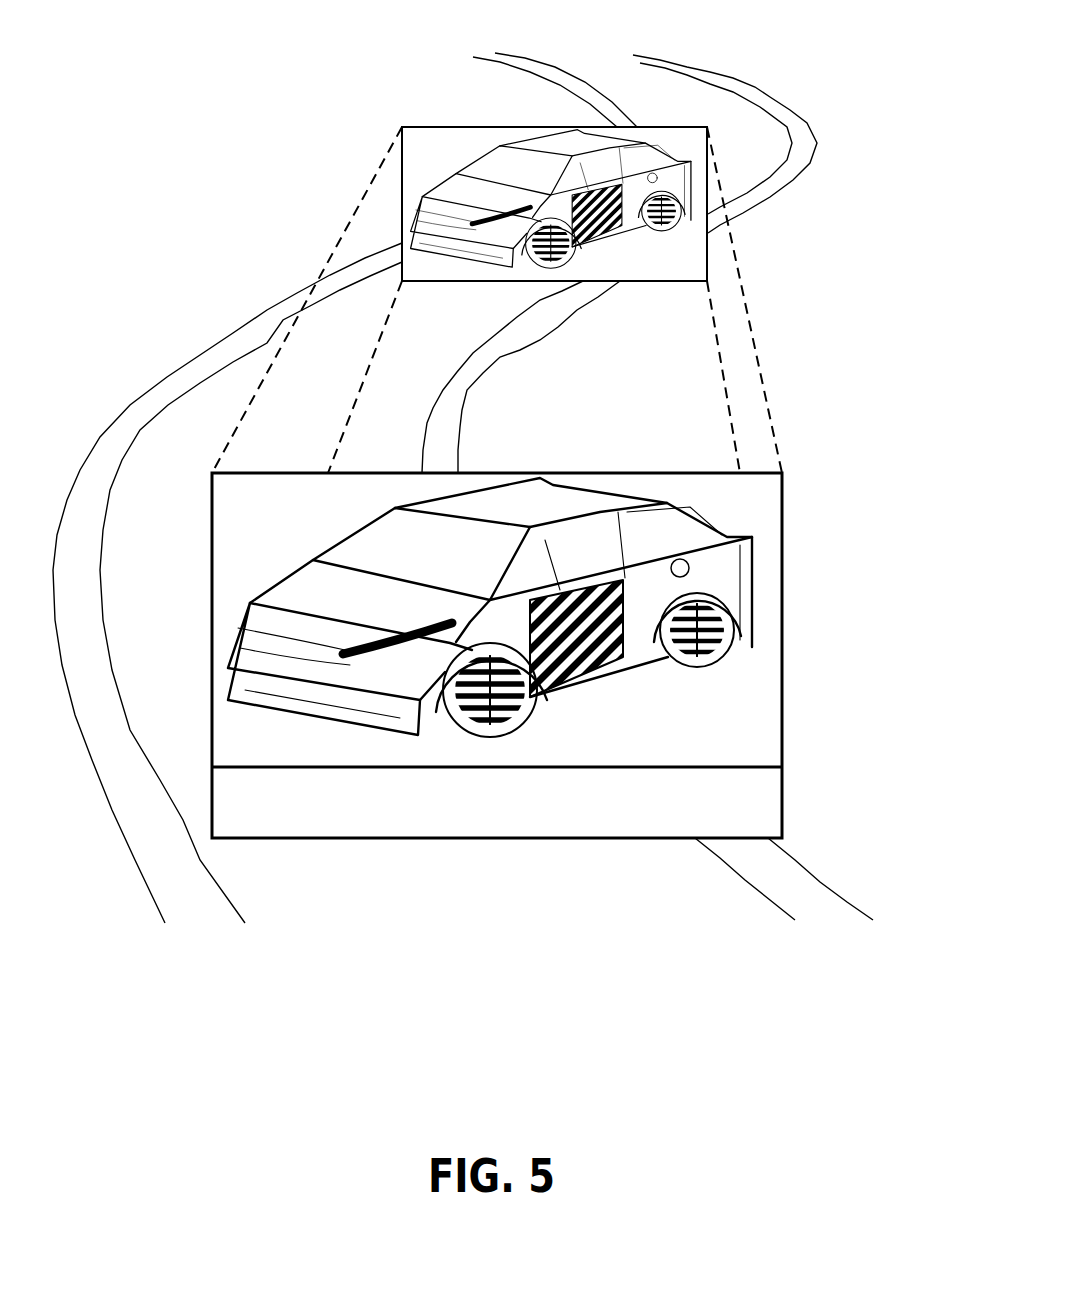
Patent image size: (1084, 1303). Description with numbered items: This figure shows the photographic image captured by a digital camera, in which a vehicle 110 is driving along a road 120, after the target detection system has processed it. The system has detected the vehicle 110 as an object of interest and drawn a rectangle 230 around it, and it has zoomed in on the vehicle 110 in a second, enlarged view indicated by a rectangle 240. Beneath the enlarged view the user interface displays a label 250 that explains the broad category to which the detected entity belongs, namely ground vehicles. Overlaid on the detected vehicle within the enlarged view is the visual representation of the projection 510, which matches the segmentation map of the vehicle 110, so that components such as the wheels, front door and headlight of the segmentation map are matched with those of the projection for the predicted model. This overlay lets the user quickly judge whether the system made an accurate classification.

The vehicle 110 is at (417, 128).
The road 120 is at (300, 272).
The rectangle 230 is at (717, 255).
The rectangle 240 is at (783, 490).
The label 250 is at (497, 649).
The visual representation of the projection 510 is at (278, 725).